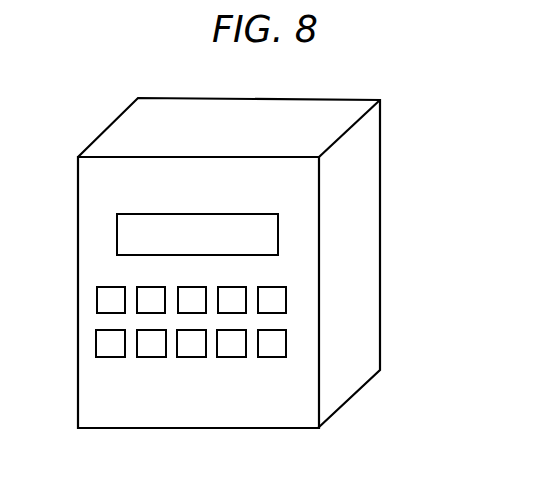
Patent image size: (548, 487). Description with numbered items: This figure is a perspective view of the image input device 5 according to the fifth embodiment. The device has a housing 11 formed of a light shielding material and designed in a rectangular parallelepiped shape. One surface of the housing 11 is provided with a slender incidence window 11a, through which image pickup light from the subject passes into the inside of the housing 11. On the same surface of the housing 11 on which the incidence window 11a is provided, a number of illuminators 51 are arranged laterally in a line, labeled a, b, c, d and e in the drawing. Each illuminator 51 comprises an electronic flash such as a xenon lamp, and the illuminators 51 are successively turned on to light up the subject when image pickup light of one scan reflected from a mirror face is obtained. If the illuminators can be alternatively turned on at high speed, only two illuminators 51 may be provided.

The image input device 5 is at (262, 245).
The housing 11 is at (367, 307).
The incidence window 11a is at (272, 232).
The illuminators 51 is at (286, 343).